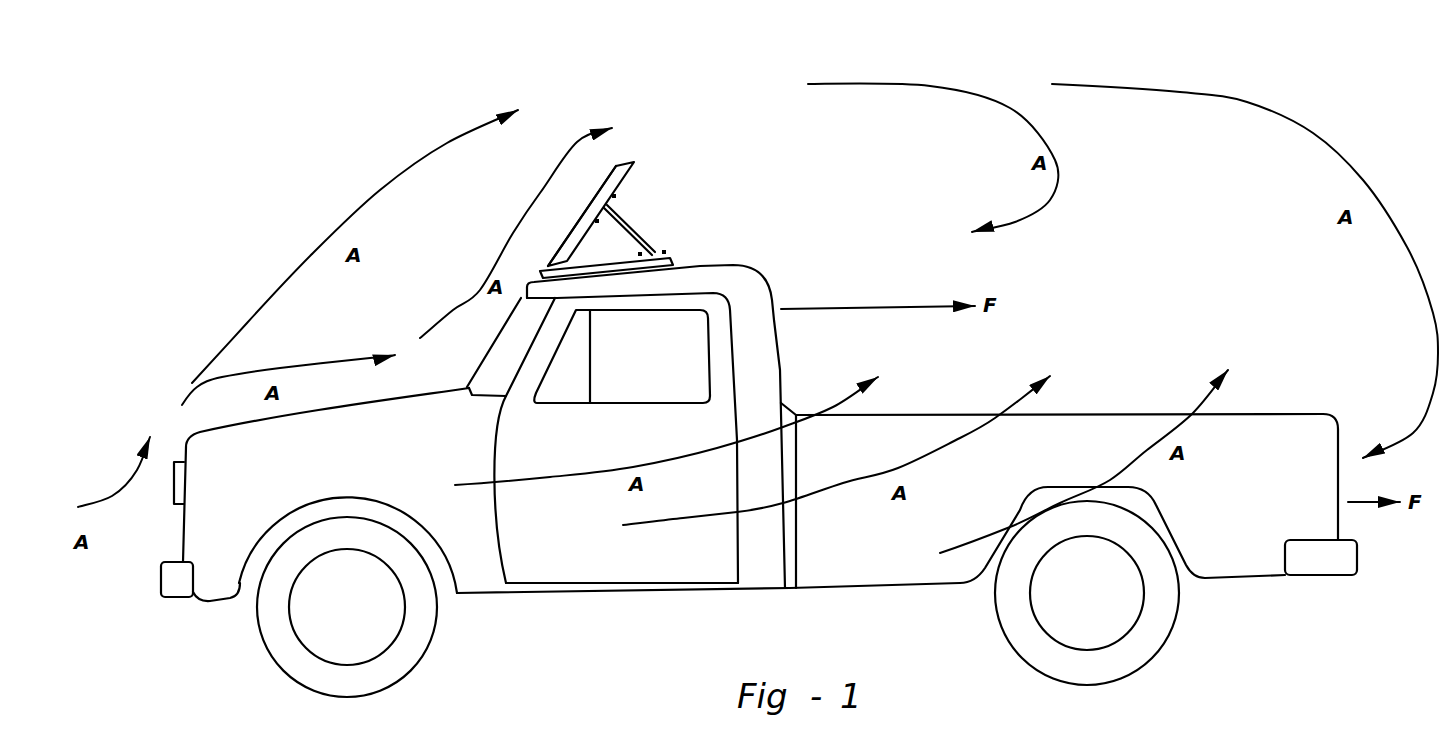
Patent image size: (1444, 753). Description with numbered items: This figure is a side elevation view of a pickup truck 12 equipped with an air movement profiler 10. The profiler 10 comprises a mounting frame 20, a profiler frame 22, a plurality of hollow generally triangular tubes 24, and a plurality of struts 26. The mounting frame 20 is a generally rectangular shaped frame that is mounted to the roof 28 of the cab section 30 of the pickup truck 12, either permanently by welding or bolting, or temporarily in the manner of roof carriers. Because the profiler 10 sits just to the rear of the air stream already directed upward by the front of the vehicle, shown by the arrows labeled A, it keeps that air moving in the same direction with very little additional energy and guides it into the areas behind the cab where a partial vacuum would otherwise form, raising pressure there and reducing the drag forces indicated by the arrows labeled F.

The air movement profiler 10 is at (631, 154).
The pickup truck 12 is at (759, 475).
The mounting frame 20 is at (668, 256).
The profiler frame 22 is at (628, 202).
The hollow generally triangular tubes 24 is at (582, 214).
The struts 26 is at (641, 240).
The roof 28 is at (753, 274).
The cab section 30 is at (668, 420).